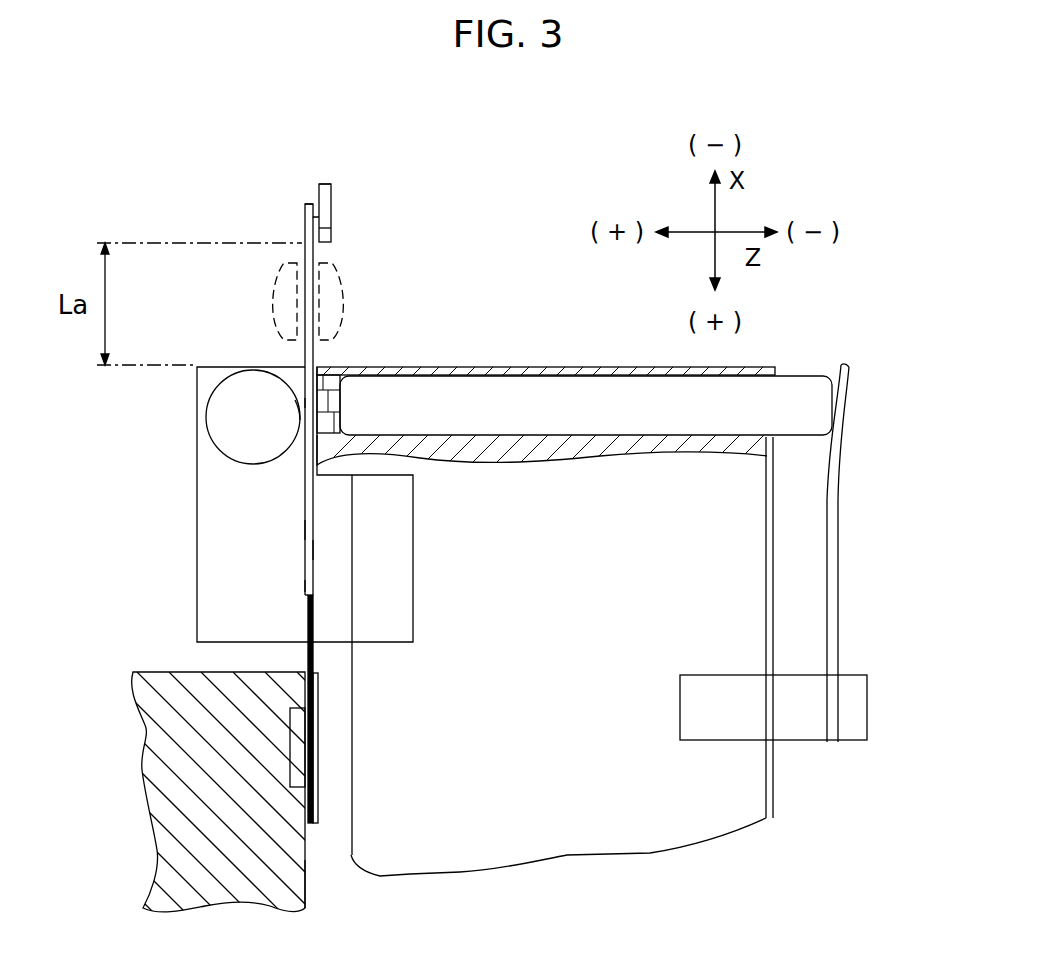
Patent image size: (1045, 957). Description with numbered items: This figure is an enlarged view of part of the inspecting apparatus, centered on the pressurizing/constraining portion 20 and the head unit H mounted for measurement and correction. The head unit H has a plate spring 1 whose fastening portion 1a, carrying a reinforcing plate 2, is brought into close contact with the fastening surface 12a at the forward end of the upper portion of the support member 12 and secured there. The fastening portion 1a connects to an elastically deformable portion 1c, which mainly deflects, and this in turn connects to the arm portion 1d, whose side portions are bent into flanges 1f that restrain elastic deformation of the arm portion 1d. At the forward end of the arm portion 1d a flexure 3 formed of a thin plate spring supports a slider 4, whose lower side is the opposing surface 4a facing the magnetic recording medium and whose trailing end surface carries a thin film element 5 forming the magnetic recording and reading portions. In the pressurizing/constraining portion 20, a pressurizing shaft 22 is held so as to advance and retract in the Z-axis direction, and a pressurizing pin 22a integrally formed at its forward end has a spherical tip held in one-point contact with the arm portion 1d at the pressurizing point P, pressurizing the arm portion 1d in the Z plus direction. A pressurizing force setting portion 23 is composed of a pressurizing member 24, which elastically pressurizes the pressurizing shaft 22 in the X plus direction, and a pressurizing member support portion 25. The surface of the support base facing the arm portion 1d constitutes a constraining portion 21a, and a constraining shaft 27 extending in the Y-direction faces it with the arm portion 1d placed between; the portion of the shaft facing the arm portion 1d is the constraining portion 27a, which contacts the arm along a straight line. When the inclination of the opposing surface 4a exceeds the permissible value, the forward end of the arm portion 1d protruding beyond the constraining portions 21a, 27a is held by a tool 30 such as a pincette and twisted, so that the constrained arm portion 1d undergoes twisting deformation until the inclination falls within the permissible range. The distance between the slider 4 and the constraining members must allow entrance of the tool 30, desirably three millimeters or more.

The plate spring 1 is at (284, 564).
The fastening portion 1a is at (316, 760).
The elastically deformable portion 1c is at (312, 620).
The arm portion 1d is at (305, 530).
The flanges 1f is at (313, 549).
The reinforcing plate 2 is at (318, 705).
The flexure 3 is at (311, 200).
The slider 4 is at (331, 197).
The opposing surface 4a is at (327, 224).
The thin film element 5 is at (325, 184).
The support member 12 is at (190, 820).
The fastening surface 12a is at (308, 880).
The pressurizing/constraining portion 20 is at (528, 349).
The constraining portion 21a is at (318, 449).
The pressurizing shaft 22 is at (481, 366).
The pressurizing pin 22a is at (330, 403).
The pressurizing force setting portion 23 is at (873, 427).
The pressurizing member 24 is at (838, 562).
The pressurizing member support portion 25 is at (808, 742).
The constraining shaft 27 is at (232, 384).
The constraining portion 27a is at (300, 413).
The tool 30 is at (330, 285).
The head unit H is at (284, 586).
The pressurizing point P is at (306, 403).